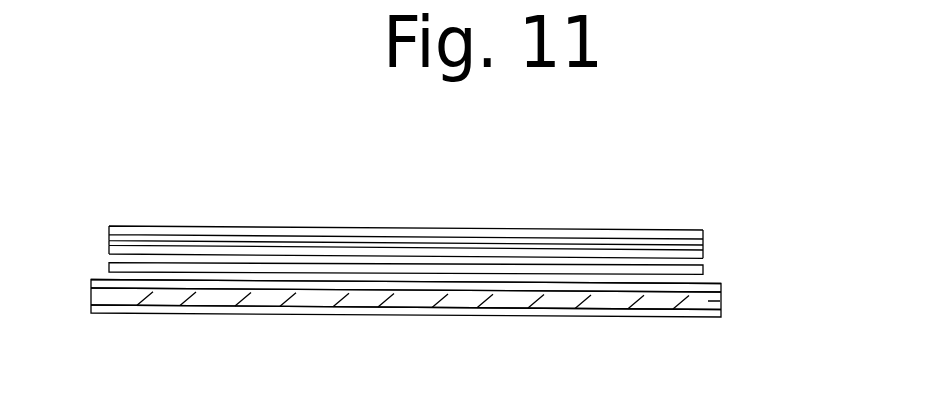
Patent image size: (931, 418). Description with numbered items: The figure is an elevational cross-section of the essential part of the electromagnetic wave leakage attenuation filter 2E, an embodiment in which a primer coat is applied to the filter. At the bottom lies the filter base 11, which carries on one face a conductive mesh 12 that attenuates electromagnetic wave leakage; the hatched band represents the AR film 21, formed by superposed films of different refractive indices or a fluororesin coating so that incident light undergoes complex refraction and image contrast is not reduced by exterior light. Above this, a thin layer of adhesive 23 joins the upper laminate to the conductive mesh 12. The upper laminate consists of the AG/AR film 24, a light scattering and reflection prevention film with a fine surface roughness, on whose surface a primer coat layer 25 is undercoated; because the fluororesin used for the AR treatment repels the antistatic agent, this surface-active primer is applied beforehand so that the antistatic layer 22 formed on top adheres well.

The electromagnetic wave leakage attenuation filter 2E is at (453, 192).
The antistatic layer 22 is at (647, 230).
The primer coat layer 25 is at (700, 246).
The AG/AR film 24 is at (707, 258).
The adhesive 23 is at (703, 272).
The conductive mesh 12 is at (722, 287).
The filter base 11 is at (722, 308).
The AR film 21 is at (620, 317).